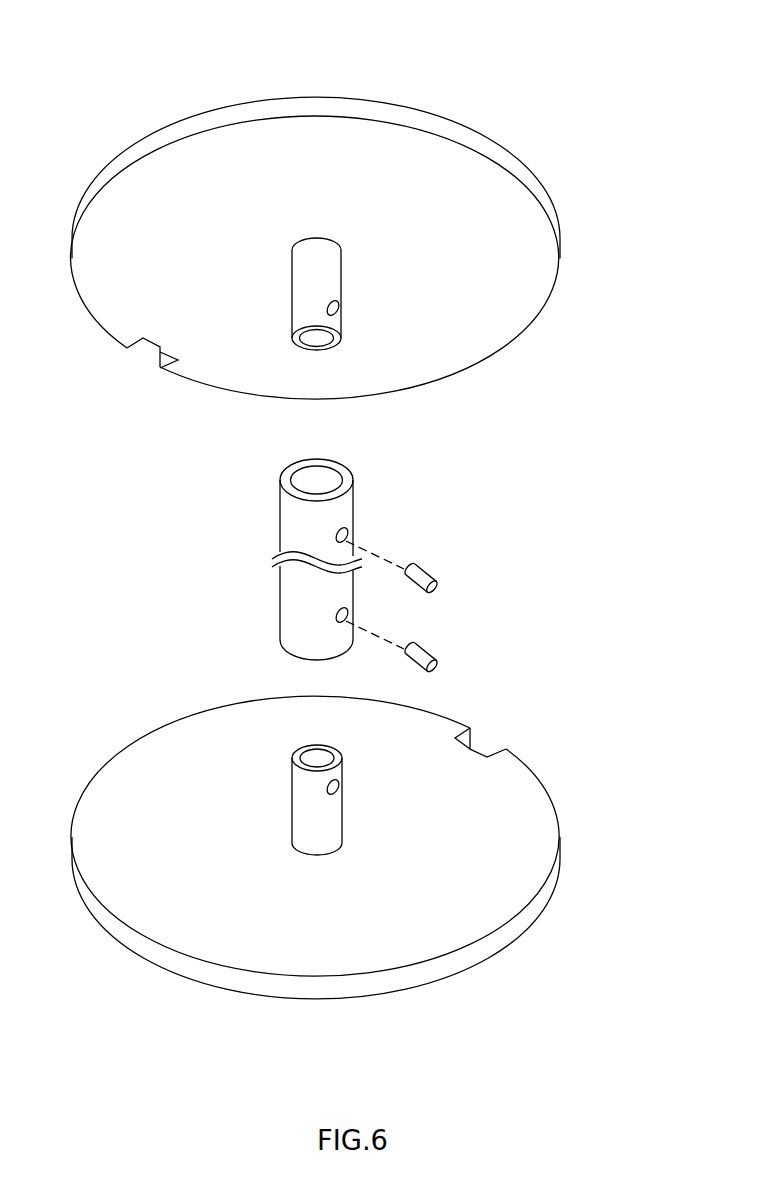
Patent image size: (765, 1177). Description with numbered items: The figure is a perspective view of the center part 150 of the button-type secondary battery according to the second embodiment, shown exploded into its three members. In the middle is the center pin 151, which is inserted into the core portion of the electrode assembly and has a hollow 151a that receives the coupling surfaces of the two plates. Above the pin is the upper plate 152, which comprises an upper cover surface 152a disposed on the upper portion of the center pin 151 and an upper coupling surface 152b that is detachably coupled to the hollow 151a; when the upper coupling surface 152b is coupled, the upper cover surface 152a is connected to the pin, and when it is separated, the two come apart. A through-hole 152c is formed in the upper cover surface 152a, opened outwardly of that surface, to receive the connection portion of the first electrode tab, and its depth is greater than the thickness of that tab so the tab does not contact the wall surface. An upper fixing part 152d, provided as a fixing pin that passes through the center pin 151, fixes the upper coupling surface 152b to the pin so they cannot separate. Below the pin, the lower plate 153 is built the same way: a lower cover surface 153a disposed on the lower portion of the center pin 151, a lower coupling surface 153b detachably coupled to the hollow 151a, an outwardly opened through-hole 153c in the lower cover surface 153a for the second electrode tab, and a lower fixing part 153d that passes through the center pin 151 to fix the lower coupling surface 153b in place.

The center part 150 is at (500, 78).
The center pin 151 is at (288, 529).
The hollow 151a is at (323, 480).
The upper plate 152 is at (623, 362).
The upper cover surface 152a is at (525, 295).
The upper coupling surface 152b is at (330, 288).
The through-hole 152c is at (146, 357).
The upper fixing part 152d is at (418, 574).
The lower plate 153 is at (701, 777).
The lower cover surface 153a is at (532, 822).
The lower coupling surface 153b is at (323, 817).
The through-hole 153c is at (480, 749).
The lower fixing part 153d is at (418, 652).